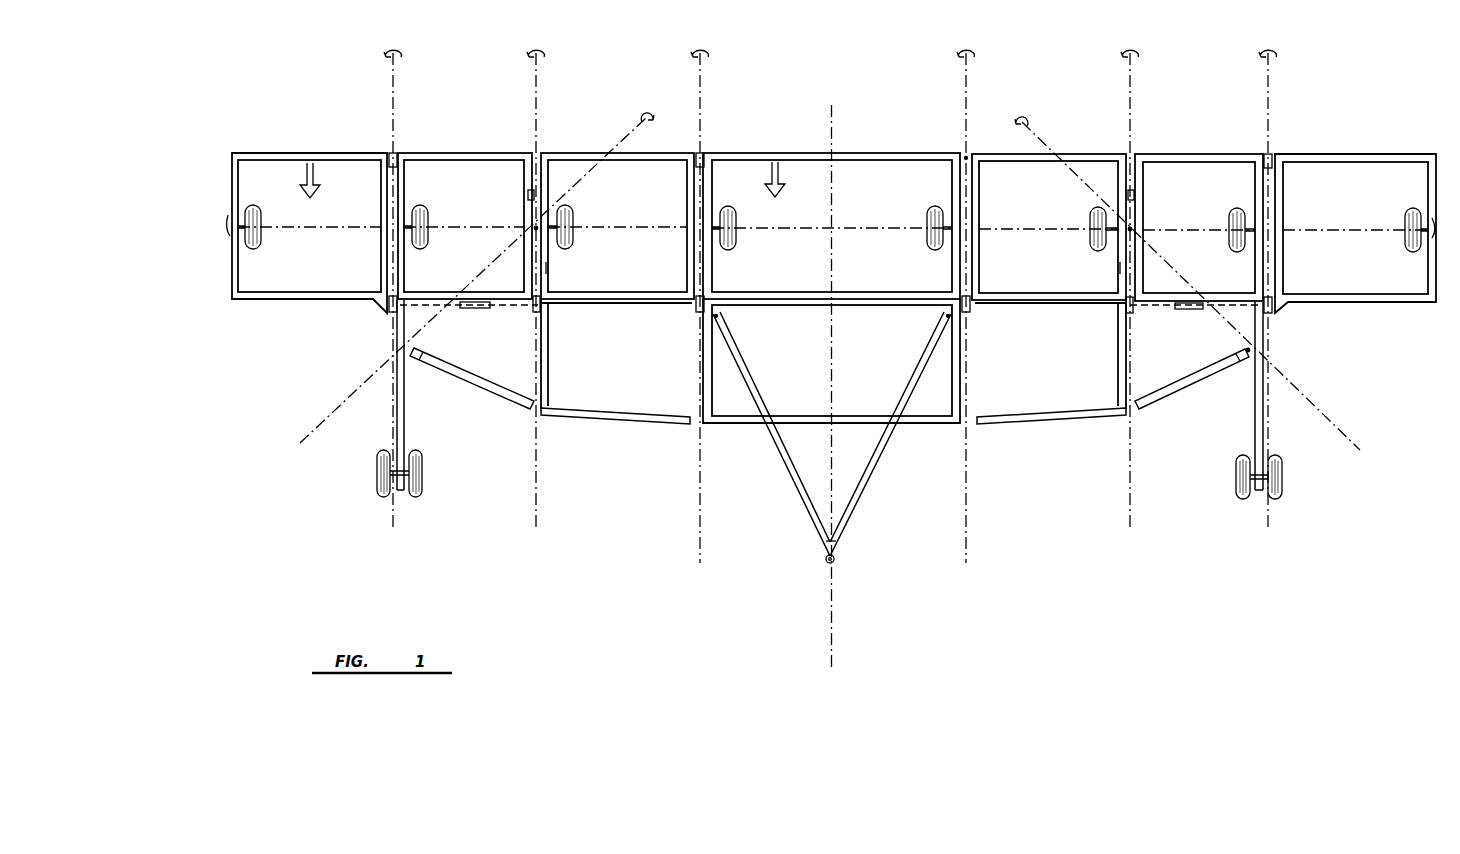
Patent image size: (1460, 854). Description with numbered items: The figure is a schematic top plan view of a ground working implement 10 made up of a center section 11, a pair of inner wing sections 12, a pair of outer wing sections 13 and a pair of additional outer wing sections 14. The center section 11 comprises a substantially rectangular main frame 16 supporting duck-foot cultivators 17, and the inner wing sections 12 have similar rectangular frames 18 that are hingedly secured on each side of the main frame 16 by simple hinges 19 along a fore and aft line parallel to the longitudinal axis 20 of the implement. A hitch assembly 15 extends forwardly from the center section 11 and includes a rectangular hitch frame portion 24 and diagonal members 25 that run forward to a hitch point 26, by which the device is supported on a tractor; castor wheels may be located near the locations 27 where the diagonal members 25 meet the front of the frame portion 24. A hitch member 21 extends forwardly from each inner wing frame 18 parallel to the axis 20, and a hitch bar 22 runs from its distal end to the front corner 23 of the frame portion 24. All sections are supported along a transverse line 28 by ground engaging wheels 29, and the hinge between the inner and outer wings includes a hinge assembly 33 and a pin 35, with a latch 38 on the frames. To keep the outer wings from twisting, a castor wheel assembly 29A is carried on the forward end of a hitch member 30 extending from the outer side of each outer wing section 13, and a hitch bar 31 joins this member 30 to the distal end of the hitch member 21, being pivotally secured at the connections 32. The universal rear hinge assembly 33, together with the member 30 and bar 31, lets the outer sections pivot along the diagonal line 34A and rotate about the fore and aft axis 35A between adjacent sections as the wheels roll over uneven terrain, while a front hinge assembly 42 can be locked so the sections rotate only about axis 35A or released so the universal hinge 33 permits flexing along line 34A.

The ground working implement 10 is at (878, 62).
The center section 11 is at (794, 250).
The inner wing sections 12 is at (634, 250).
The outer wing sections 13 is at (472, 250).
The additional outer wing sections 14 is at (309, 250).
The hitch assembly 15 is at (831, 443).
The main frame 16 is at (766, 296).
The duck-foot cultivators 17 is at (316, 196).
The frames 18 is at (634, 296).
The hinges 19 is at (392, 155).
The longitudinal axis 20 is at (833, 660).
The hitch member 21 is at (549, 370).
The hitch bar 22 is at (620, 421).
The front corner 23 is at (716, 428).
The rectangular hitch frame portion 24 is at (934, 433).
The diagonal members 25 is at (874, 490).
The hitch point 26 is at (825, 560).
The locations 27 is at (765, 418).
The transverse line 28 is at (228, 215).
The ground engaging wheels 29 is at (930, 241).
The castor wheel assembly 29A is at (376, 490).
The hitch member 30 is at (396, 329).
The hitch bar 31 is at (495, 362).
The pivotal connections 32 is at (414, 352).
The universal rear hinge assembly 33 is at (531, 220).
The pivot line 34A is at (1360, 450).
The hinge pin 35 is at (530, 194).
The fore and aft axis 35A is at (825, 293).
The latch 38 is at (548, 268).
The front hinge assembly 42 is at (563, 311).